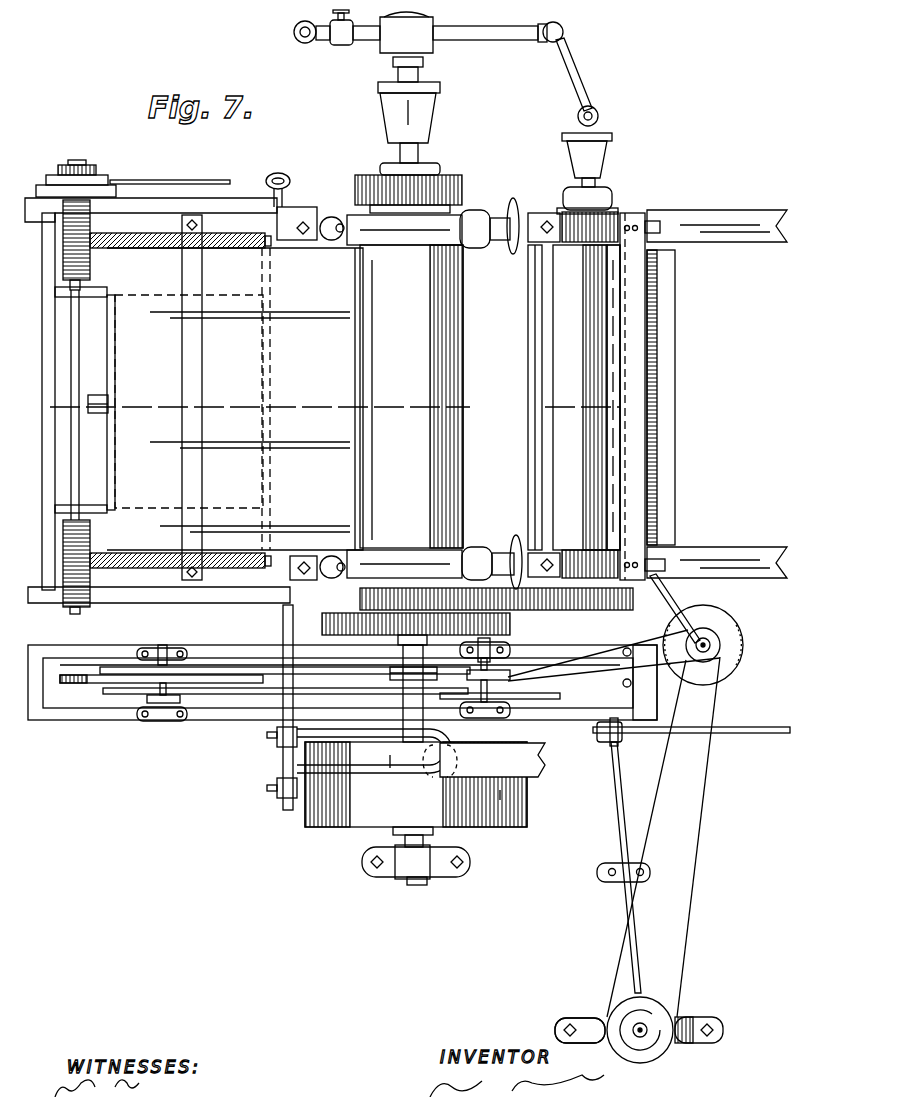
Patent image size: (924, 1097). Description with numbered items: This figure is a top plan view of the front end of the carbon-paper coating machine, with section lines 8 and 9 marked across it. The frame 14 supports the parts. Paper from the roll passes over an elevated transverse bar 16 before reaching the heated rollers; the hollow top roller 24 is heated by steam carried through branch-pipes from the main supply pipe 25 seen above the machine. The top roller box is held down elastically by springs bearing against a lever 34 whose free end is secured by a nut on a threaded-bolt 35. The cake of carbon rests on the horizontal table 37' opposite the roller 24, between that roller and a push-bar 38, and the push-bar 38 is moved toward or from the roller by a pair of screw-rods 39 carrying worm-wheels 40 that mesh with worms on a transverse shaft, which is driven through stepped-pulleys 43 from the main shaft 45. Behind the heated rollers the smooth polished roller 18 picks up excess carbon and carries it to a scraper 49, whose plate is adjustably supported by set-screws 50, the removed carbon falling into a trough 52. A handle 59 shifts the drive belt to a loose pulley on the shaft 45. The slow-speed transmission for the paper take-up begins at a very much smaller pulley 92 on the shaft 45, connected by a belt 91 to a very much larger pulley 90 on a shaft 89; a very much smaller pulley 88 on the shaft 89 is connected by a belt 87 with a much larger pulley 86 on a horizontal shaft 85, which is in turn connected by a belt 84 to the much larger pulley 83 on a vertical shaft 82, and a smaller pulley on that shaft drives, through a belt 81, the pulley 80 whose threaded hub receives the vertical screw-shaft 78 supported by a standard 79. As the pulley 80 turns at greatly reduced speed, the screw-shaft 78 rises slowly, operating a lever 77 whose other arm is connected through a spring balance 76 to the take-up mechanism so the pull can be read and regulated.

The main supply pipe 25 is at (440, 38).
The threaded-bolt 35 is at (338, 214).
The lever 34 is at (413, 229).
The frame 14 is at (728, 214).
The stepped-pulleys 43 is at (97, 175).
The handle 59 is at (278, 173).
The worm-wheels 40 is at (63, 263).
The screw-rods 39 is at (143, 241).
The push-bar 38 is at (203, 357).
The table 37' is at (235, 399).
The roller 24 is at (452, 410).
The transverse bar 16 is at (533, 465).
The roller 18 is at (568, 325).
The scraper 49 is at (615, 410).
The set-screws 50 is at (635, 462).
The trough 52 is at (660, 324).
The section line 9— 9 is at (50, 407).
The section line 8— 8 is at (233, 605).
The pulley 90 is at (80, 685).
The pulley 88 is at (152, 703).
The shaft 89 is at (163, 723).
The belt 87 is at (243, 696).
The belt 91 is at (285, 682).
The pulley 92 is at (392, 670).
The horizontal shaft 85 is at (485, 716).
The pulley 86 is at (565, 700).
The belt 84 is at (583, 660).
The pulley 83 is at (745, 650).
The vertical shaft 82 is at (712, 640).
The belt 81 is at (705, 805).
The spring balance 76 is at (607, 741).
The lever 77 is at (616, 808).
The shaft 45 is at (415, 886).
The pulley 80 is at (660, 1052).
The screw-shaft 78 is at (645, 1027).
The standard 79 is at (596, 1020).